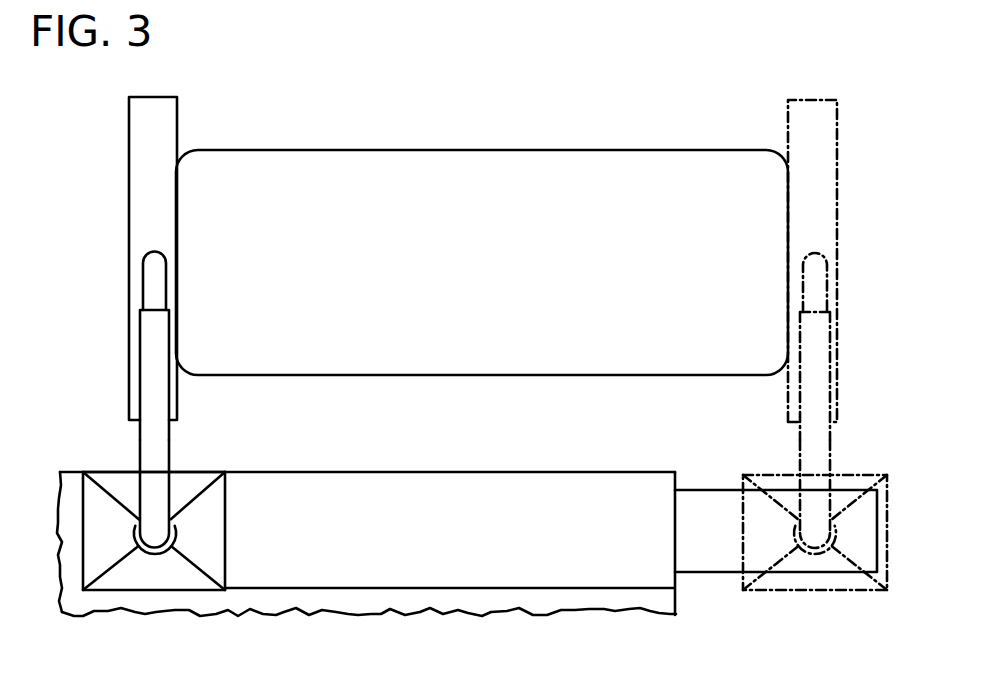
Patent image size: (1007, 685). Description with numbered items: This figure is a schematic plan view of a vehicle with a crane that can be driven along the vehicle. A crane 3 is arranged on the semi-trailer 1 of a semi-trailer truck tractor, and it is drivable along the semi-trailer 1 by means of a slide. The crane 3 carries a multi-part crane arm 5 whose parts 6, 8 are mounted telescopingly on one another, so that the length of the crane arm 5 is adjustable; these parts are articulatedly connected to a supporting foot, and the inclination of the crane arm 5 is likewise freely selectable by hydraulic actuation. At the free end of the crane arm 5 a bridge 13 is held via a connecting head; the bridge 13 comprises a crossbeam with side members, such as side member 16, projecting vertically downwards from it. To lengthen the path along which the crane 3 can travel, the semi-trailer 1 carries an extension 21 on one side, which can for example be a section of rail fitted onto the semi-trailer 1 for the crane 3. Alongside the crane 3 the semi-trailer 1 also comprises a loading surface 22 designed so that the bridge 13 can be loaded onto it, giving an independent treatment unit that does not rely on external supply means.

The semi-trailer 1 is at (317, 598).
The crane 3 is at (158, 592).
The crane arm 5 is at (126, 385).
The part of the crane arm 6 is at (143, 264).
The part of the crane arm 8 is at (147, 440).
The bridge 13 is at (134, 131).
The side member 16 is at (471, 158).
The extension 21 is at (712, 500).
The loading surface 22 is at (450, 478).